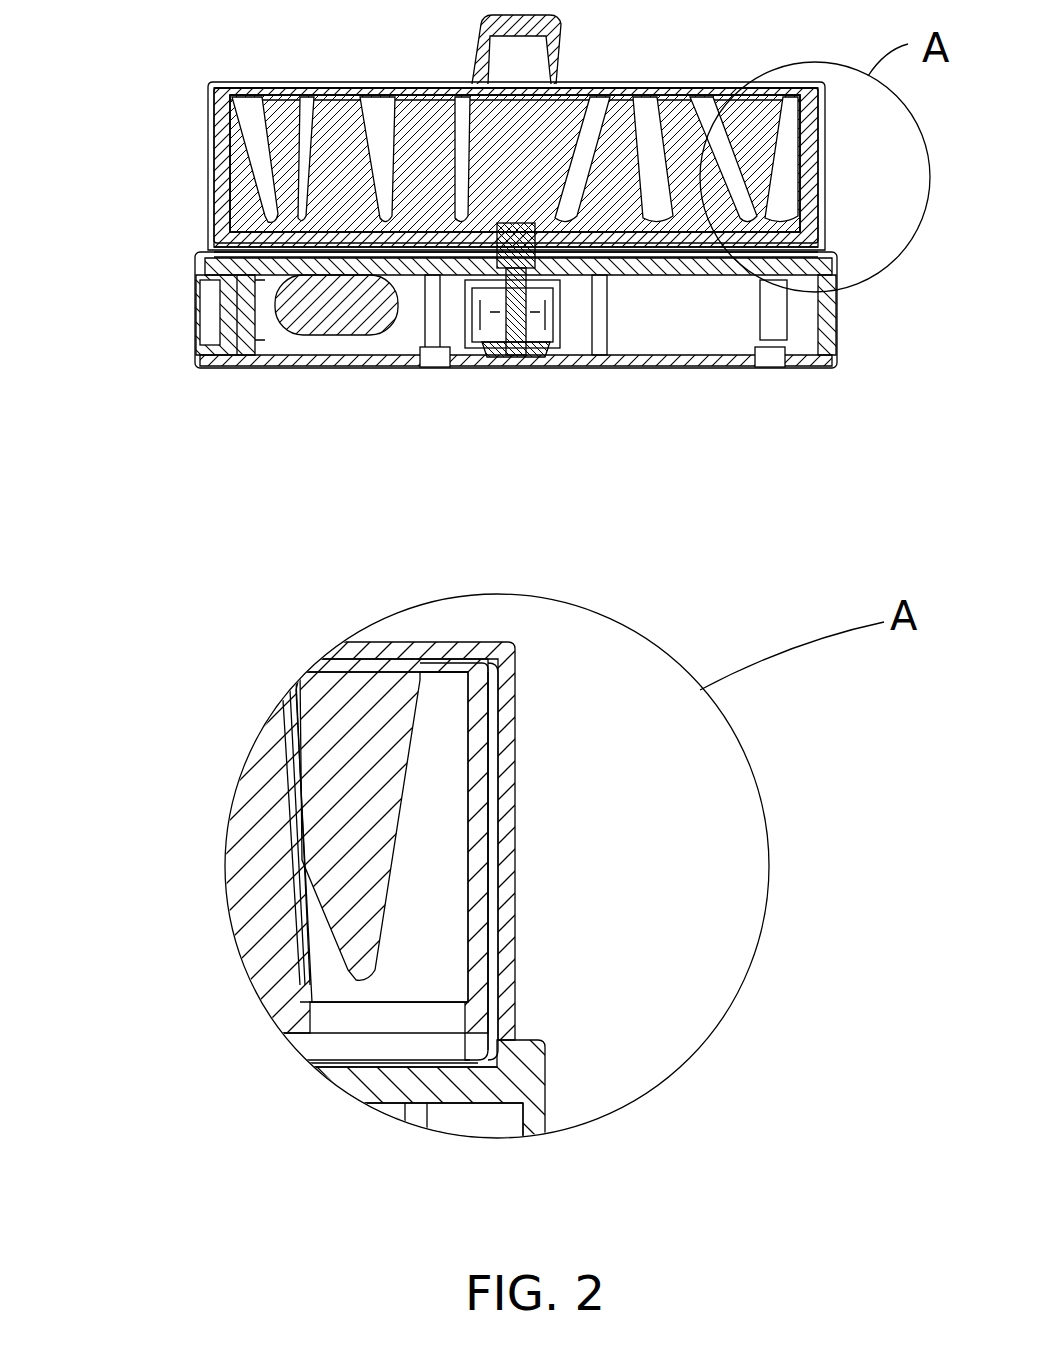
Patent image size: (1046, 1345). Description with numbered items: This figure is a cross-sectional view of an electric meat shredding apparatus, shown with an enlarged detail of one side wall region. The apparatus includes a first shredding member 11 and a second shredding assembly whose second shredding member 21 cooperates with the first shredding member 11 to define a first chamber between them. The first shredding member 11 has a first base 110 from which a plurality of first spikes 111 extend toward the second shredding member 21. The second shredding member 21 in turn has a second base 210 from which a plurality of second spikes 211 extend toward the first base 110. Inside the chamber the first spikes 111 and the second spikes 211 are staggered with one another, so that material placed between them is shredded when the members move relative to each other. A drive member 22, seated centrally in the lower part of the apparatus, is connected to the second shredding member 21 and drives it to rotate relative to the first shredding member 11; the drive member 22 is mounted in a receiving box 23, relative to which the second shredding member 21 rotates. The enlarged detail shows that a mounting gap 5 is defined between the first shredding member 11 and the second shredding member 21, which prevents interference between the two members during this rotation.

The first shredding member 11 is at (208, 94).
The second shredding member 21 is at (222, 160).
The second spikes 211 is at (320, 94).
The first spikes 111 is at (270, 212).
The receiving box 23 is at (195, 283).
The drive member 22 is at (535, 357).
The first base 110 is at (470, 655).
The mounting gap 5 is at (487, 824).
The second base 210 is at (343, 1020).